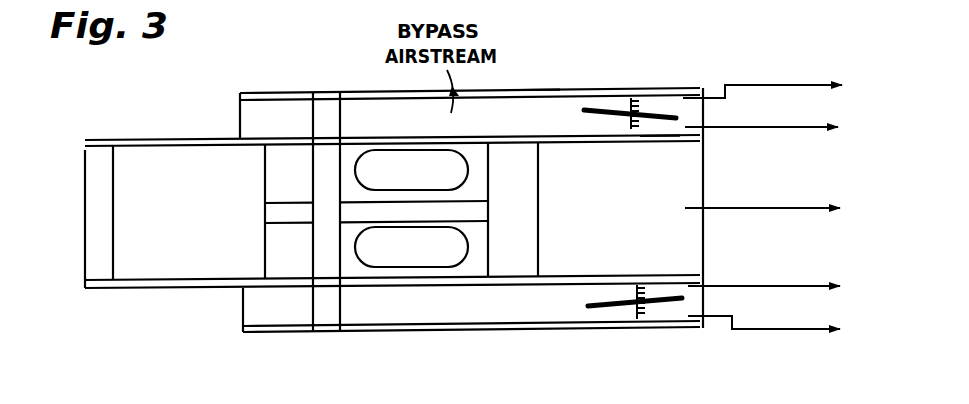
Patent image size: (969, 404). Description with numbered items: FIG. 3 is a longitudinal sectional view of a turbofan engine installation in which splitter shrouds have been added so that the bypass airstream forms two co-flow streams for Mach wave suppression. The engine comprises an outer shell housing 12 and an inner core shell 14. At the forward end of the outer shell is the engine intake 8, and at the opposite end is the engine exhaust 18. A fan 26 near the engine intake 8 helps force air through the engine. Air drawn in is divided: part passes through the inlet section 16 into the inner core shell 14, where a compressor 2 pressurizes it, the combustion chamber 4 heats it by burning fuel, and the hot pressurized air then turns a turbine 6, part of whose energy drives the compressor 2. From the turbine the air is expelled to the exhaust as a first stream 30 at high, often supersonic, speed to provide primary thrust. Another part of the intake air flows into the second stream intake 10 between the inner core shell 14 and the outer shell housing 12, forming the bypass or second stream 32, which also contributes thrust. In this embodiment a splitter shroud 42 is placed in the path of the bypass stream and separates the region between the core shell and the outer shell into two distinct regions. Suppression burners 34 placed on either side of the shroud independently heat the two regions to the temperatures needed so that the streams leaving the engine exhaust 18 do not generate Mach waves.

The compressor 2 is at (196, 252).
The combustion chamber 4 is at (407, 177).
The turbine 6 is at (518, 270).
The engine intake 8 is at (72, 95).
The second stream intake 10 is at (234, 100).
The outer shell housing 12 is at (540, 91).
The inner core shell 14 is at (657, 137).
The inlet section 16 is at (100, 158).
The engine exhaust 18 is at (794, 194).
The fan 26 is at (325, 108).
The first stream 30 is at (786, 210).
The second stream 32 is at (792, 131).
The suppression burners 34 is at (650, 100).
The splitter shroud 42 is at (593, 116).